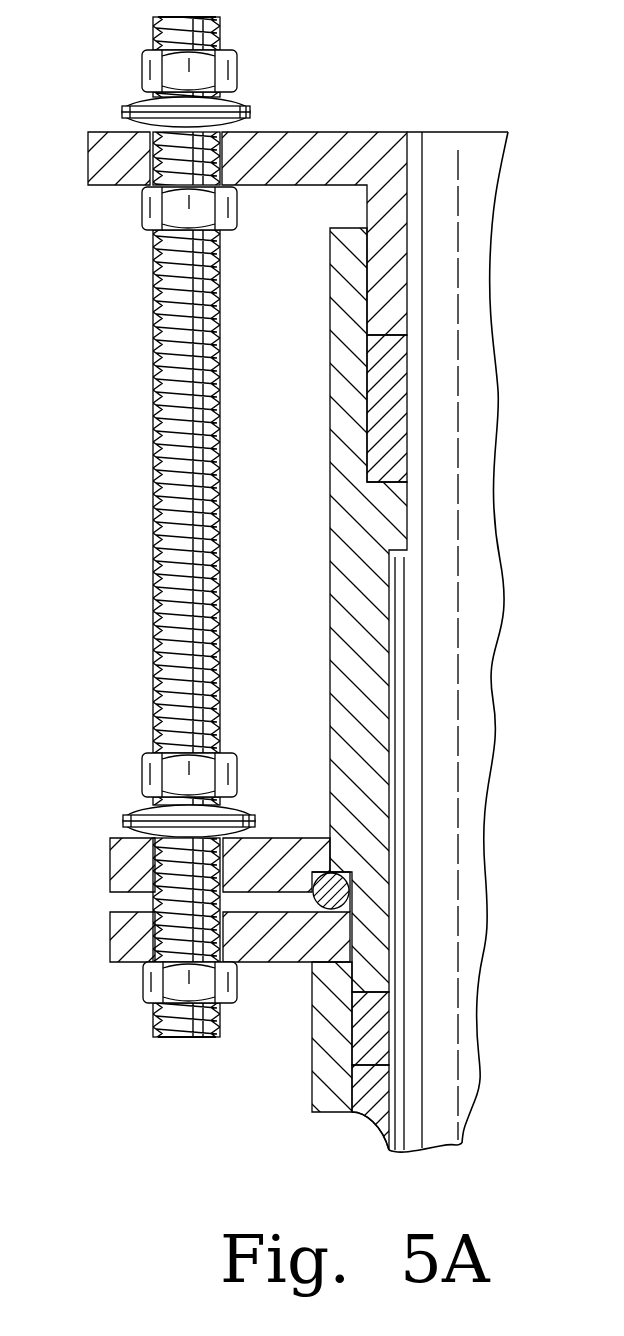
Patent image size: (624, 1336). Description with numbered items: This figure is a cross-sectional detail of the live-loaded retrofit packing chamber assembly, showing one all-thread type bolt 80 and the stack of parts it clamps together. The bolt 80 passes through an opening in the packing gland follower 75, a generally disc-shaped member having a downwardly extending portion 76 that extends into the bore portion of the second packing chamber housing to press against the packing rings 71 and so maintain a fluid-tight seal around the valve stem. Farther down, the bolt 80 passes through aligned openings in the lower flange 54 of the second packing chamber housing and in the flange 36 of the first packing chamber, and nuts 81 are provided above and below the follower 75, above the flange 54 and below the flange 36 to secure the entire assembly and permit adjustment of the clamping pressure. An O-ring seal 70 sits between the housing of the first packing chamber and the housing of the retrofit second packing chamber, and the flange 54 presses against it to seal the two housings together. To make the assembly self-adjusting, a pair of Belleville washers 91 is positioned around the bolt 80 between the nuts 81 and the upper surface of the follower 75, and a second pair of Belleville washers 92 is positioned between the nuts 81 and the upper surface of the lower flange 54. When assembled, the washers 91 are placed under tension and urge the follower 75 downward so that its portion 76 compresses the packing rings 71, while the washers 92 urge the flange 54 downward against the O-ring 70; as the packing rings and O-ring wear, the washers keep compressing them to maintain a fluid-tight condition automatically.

The flange 36 is at (110, 930).
The lower flange 54 is at (110, 860).
The O-ring seal 70 is at (345, 892).
The packing ring 71 is at (390, 370).
The packing gland follower 75 is at (362, 134).
The downwardly extending portion 76 is at (387, 250).
The all-thread type bolt 80 is at (155, 372).
The nut 81 is at (231, 63).
The Belleville washer 91 is at (122, 109).
The Belleville washer 92 is at (125, 818).